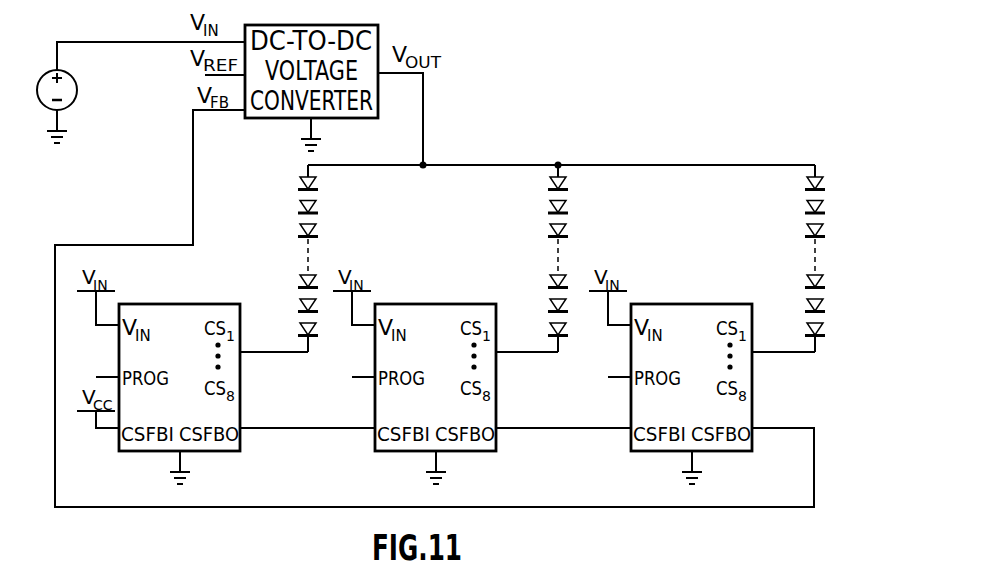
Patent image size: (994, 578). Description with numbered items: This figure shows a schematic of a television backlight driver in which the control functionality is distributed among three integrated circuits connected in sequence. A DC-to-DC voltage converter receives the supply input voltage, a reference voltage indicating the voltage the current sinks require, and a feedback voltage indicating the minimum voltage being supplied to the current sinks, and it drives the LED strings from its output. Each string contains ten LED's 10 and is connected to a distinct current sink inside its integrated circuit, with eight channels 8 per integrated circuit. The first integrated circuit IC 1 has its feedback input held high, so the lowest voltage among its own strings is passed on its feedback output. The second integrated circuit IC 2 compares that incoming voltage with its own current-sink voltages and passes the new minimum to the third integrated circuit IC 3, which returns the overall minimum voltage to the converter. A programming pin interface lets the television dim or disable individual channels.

The first integrated circuit 1 is at (158, 374).
The second integrated circuit 2 is at (414, 374).
The third integrated circuit 3 is at (670, 374).
The eight channels per integrated circuit 8 is at (797, 342).
The ten LED's per string 10 is at (561, 258).